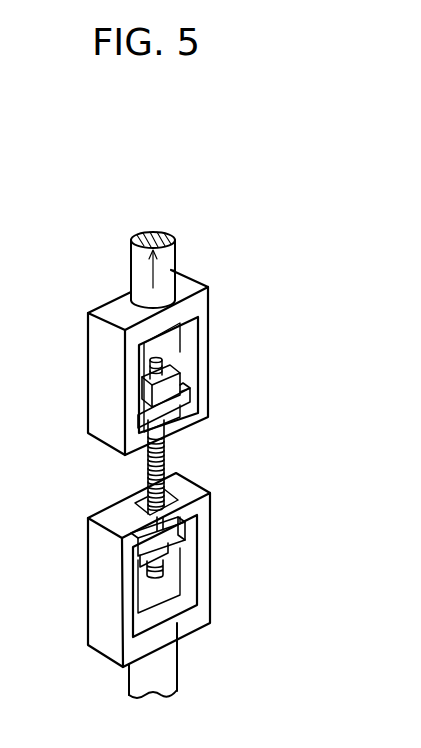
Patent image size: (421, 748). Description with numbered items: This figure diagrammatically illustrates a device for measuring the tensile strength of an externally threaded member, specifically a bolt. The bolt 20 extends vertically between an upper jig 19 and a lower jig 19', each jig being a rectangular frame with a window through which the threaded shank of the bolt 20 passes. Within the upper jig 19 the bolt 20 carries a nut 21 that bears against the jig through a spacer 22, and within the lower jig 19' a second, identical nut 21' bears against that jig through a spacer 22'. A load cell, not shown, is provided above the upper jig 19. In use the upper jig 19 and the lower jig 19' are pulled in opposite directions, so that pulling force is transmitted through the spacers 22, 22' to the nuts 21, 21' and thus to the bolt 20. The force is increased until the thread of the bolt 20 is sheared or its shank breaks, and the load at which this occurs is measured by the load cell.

The upper jig 19 is at (120, 362).
The lower jig 19' is at (116, 585).
The bolt 20 is at (164, 458).
The nut 21 is at (206, 346).
The nut 21' is at (205, 552).
The spacer 22 is at (205, 396).
The spacer 22' is at (202, 528).